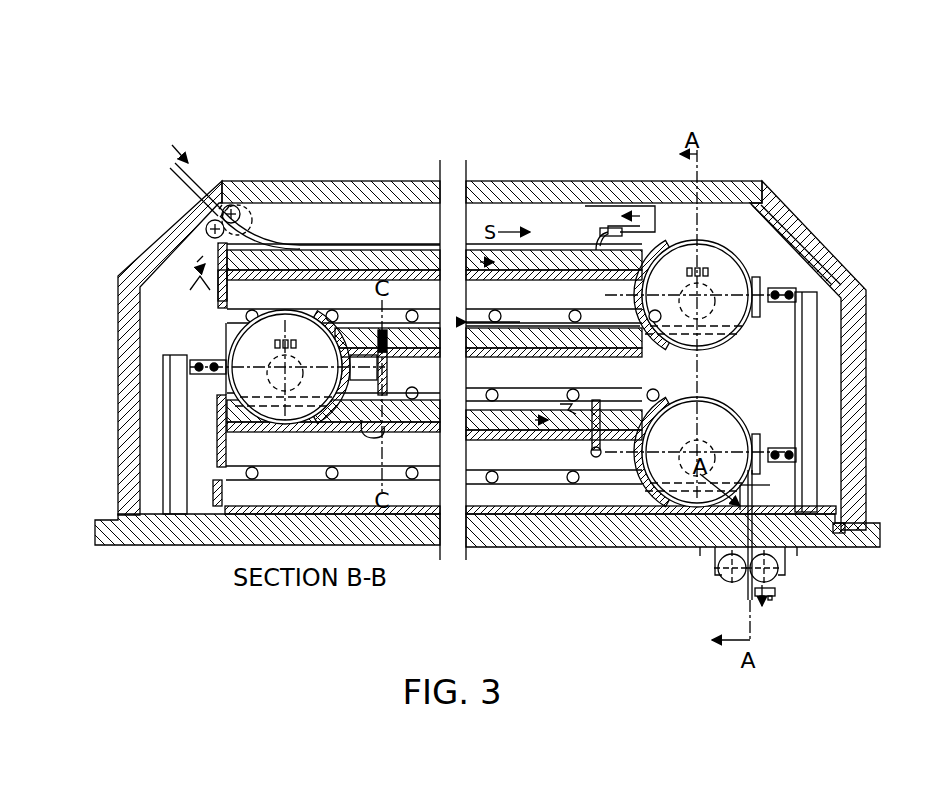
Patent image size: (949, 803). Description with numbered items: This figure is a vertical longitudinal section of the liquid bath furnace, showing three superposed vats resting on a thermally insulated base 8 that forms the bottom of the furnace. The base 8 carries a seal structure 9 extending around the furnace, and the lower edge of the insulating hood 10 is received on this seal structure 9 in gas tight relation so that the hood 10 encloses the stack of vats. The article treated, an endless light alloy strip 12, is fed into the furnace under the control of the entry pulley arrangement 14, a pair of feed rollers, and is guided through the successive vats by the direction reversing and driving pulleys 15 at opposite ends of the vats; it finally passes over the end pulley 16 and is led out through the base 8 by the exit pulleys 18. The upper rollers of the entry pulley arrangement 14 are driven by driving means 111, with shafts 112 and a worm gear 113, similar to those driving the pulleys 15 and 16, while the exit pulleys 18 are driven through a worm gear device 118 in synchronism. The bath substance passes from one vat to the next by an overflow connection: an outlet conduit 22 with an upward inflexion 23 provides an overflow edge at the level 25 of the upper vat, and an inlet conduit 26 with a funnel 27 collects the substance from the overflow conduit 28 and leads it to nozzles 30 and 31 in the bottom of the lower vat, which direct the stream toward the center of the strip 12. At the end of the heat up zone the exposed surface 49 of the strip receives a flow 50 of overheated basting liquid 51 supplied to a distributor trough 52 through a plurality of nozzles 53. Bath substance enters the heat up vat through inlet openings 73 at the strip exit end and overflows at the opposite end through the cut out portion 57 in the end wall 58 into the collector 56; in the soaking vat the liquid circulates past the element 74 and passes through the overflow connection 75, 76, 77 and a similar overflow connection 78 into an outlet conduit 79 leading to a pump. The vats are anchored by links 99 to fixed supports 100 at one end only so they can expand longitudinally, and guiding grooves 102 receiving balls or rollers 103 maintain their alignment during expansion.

The thermally insulated base 8 is at (600, 546).
The seal structure 9 is at (848, 534).
The insulating hood 10 is at (715, 190).
The metallic strip 12 is at (315, 181).
The entry pulley arrangement 14 is at (266, 243).
The direction reversing and driving pulleys 15 is at (262, 424).
The end pulley 16 is at (735, 436).
The exit pulleys 18 is at (726, 582).
The outlet conduit 22 is at (389, 368).
The upward inflexion 23 is at (388, 330).
The level 25 is at (348, 322).
The inlet conduit 26 is at (372, 440).
The funnel 27 is at (408, 390).
The overflow conduit 28 is at (364, 386).
The nozzle 30 is at (355, 428).
The nozzle 31 is at (310, 426).
The exposed surface 49 is at (555, 250).
The flow of overheated fluid 50 is at (590, 250).
The basting liquid 51 is at (640, 212).
The distributor trough 52 is at (655, 210).
The nozzles 53 is at (590, 246).
The collector 56 is at (183, 278).
The cut out portion 57 is at (215, 243).
The end wall 58 is at (222, 303).
The inlet openings 73 is at (626, 270).
The middle heating plate 74 is at (665, 348).
The overflow connection 75 is at (363, 367).
The overflow connection 76 is at (380, 332).
The overflow connection 77 is at (386, 432).
The overflow connection 78 is at (594, 400).
The outlet conduit 79 is at (585, 440).
The links 99 is at (206, 358).
The fixed supports 100 is at (163, 378).
The guiding grooves 102 is at (473, 320).
The balls or rollers 103 is at (510, 318).
The driving means 111 is at (268, 368).
The shafts 112 is at (672, 268).
The worm gear 113 is at (222, 185).
The worm gear device 118 is at (776, 592).